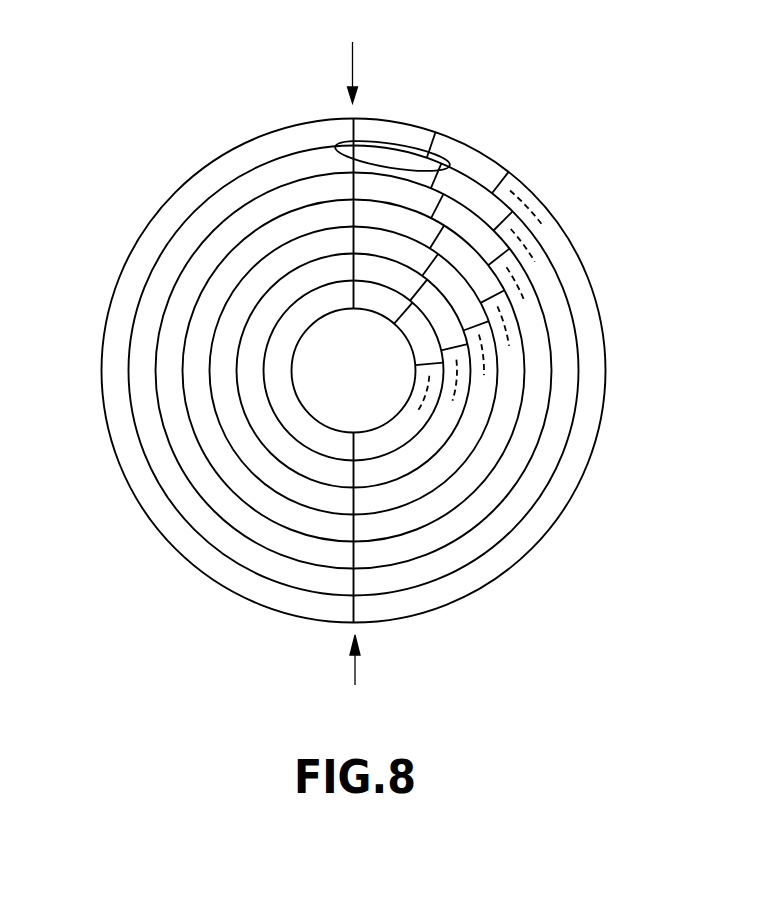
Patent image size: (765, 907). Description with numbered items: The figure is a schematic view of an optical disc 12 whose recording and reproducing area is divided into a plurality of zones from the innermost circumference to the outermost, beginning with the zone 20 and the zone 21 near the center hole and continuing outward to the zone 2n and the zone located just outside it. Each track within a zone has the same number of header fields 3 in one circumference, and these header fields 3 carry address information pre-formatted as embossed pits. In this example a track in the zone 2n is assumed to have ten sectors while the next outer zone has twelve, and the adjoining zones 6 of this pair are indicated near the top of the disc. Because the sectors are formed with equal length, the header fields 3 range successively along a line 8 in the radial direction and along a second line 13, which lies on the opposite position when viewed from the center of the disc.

The optical disc 12 is at (247, 21).
The line 8 is at (353, 60).
The line 13 is at (357, 677).
The header field 3 is at (355, 131).
The adjoining zones 6 is at (407, 147).
The zone 20 is at (354, 371).
The zone 21 is at (407, 557).
The zone 2n is at (354, 371).